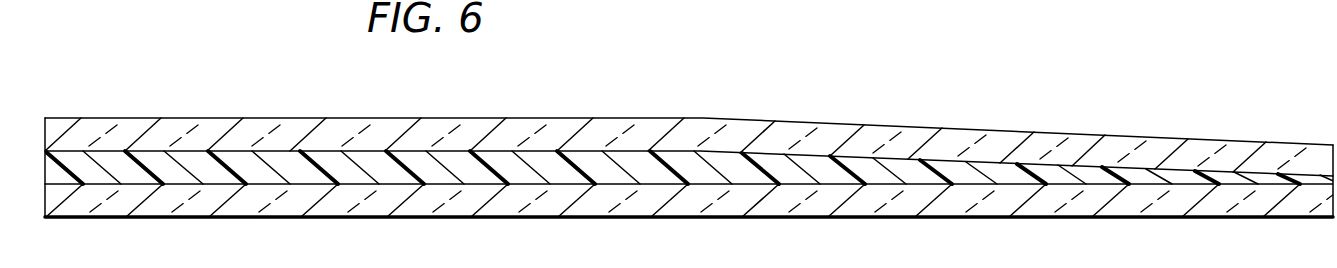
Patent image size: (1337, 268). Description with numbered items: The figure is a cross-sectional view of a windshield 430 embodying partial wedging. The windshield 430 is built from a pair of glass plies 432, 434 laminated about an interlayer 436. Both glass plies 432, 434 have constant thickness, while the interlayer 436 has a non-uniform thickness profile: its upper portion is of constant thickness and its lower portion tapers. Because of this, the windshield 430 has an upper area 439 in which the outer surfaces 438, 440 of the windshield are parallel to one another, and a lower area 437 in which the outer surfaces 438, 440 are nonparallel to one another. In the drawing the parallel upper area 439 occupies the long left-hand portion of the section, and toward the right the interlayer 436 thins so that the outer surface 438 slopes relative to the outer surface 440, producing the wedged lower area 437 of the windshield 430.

The upper area 439 is at (154, 98).
The outer surface 438 is at (878, 127).
The windshield 430 is at (963, 121).
The lower area 437 is at (1055, 106).
The interlayer 436 is at (1227, 178).
The glass ply 432 is at (1288, 150).
The outer surface 440 is at (825, 220).
The glass ply 434 is at (1248, 207).